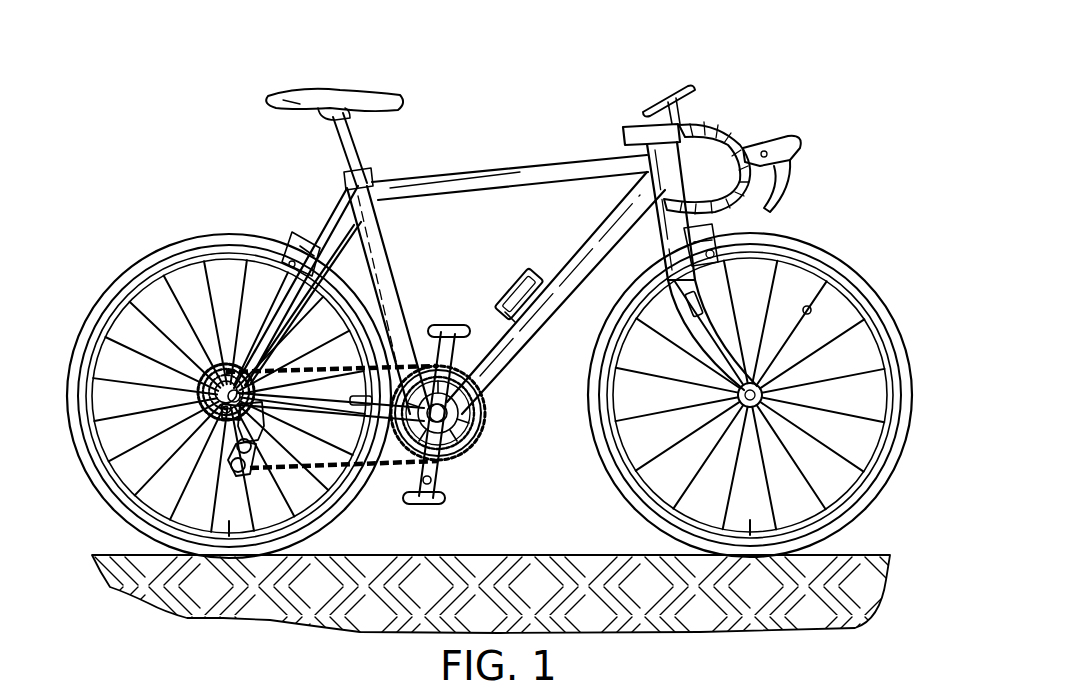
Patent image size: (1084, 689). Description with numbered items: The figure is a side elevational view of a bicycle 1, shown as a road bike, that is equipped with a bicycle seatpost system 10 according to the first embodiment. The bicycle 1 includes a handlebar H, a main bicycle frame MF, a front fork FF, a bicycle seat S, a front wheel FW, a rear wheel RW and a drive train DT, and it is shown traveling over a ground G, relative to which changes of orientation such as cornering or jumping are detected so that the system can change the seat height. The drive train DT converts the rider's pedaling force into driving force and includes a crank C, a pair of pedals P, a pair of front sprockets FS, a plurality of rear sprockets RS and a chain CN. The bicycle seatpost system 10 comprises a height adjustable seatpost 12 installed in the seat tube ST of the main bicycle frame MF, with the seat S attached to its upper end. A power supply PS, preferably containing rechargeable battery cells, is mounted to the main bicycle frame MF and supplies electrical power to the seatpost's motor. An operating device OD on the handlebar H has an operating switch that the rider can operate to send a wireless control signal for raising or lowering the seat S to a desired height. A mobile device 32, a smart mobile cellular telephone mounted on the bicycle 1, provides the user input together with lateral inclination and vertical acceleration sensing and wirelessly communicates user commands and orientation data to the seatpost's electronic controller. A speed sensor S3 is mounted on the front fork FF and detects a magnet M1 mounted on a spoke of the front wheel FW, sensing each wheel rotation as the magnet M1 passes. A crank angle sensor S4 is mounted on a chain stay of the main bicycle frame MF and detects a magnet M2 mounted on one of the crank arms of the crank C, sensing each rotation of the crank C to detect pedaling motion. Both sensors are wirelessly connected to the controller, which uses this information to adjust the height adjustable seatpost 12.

The bicycle 1 is at (782, 78).
The bicycle seatpost system 10 is at (656, 45).
The height adjustable seatpost 12 is at (360, 148).
The mobile device 32 is at (650, 97).
The bicycle seat S is at (330, 92).
The handlebar H is at (716, 124).
The operating device OD is at (762, 148).
The main bicycle frame MF is at (522, 165).
The seat tube ST is at (396, 268).
The power supply PS is at (508, 282).
The pedals P is at (443, 324).
The speed sensor S3 is at (705, 301).
The crank angle sensor S4 is at (358, 396).
The front fork FF is at (702, 348).
The front wheel FW is at (904, 326).
The rear wheel RW is at (142, 262).
The magnet M1 is at (812, 311).
The magnet M2 is at (432, 480).
The rear sprockets RS is at (196, 400).
The front sprockets FS is at (484, 408).
The crank C is at (464, 458).
The chain CN is at (290, 472).
The drive train DT is at (390, 482).
The ground G is at (858, 555).